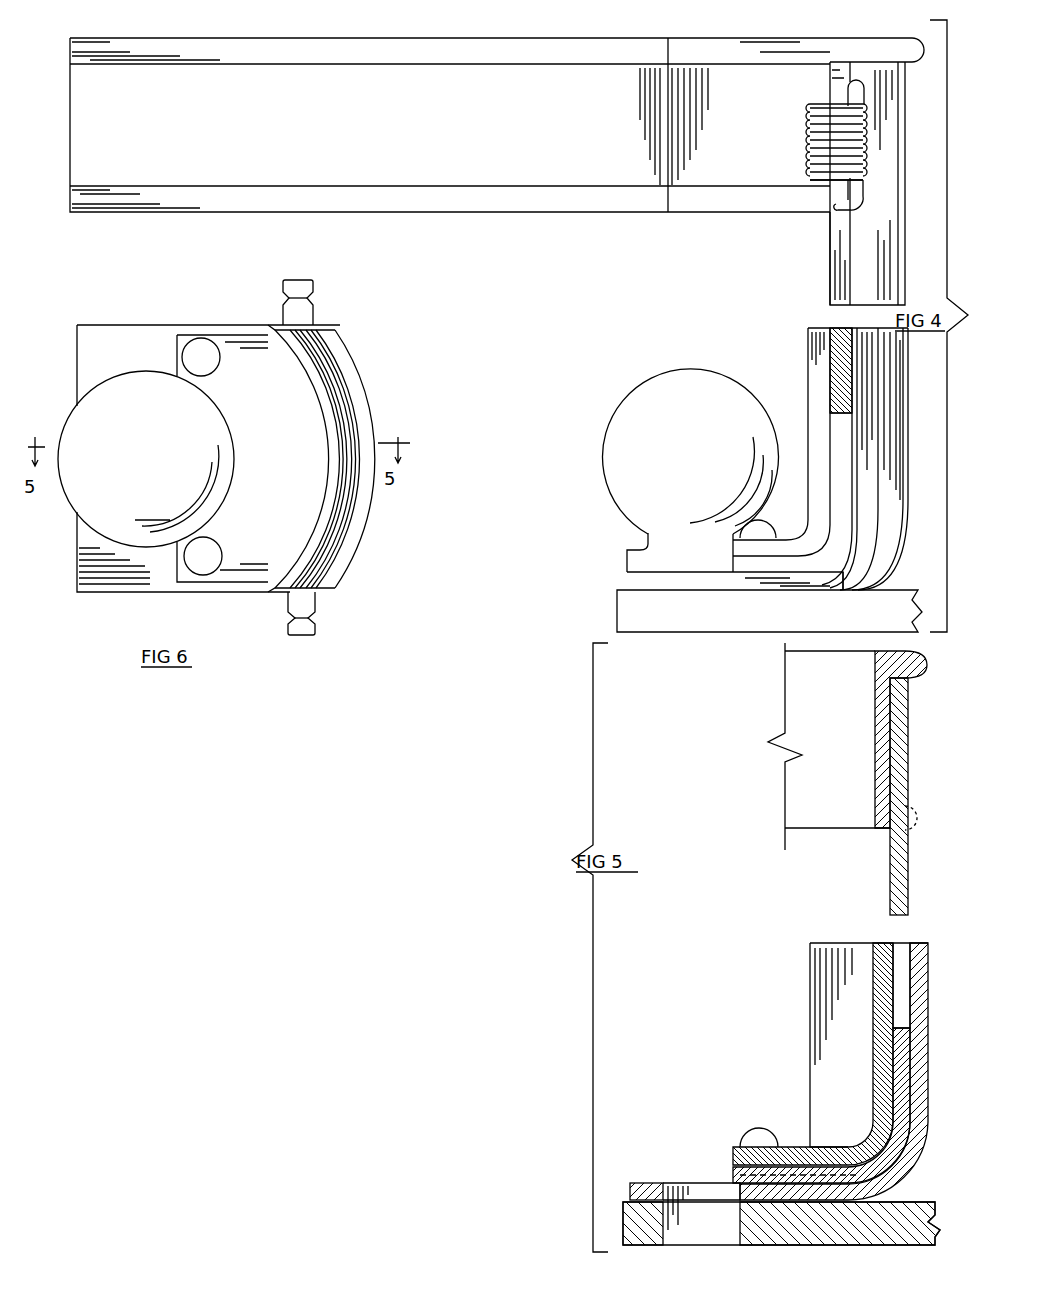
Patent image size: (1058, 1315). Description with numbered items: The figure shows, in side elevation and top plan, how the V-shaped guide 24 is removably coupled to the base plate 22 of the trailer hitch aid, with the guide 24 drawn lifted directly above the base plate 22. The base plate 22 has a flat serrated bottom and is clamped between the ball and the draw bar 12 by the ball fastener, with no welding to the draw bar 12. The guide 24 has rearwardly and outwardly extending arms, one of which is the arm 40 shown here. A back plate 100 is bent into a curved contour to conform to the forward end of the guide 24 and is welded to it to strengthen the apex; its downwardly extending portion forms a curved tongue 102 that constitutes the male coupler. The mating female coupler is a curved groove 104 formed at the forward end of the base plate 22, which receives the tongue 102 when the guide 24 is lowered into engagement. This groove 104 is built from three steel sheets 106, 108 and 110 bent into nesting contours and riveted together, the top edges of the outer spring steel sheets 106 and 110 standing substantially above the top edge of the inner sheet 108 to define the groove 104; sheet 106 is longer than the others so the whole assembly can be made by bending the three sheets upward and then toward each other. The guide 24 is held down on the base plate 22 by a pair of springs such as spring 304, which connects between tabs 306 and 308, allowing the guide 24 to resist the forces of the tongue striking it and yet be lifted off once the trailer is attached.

In FIG. 4, the draw bar 12 is at (625, 617).
In FIG. 5, the draw bar 12 is at (793, 1228).
In FIG. 4, the base plate 22 is at (627, 584).
In FIG. 5, the base plate 22 is at (630, 1183).
In FIG. 4, the V-shaped guide 24 is at (452, 40).
In FIG. 5, the arm 40 is at (812, 727).
In FIG. 4, the back plate 100 is at (877, 115).
In FIG. 5, the back plate 100 is at (897, 727).
In FIG. 4, the tongue 102 is at (838, 243).
In FIG. 5, the tongue 102 is at (895, 863).
In FIG. 4, the curved groove 104 is at (840, 388).
In FIG. 5, the curved groove 104 is at (900, 955).
In FIG. 4, the steel sheet 106 is at (895, 502).
In FIG. 5, the steel sheet 106 is at (925, 943).
In FIG. 4, the steel sheet 108 is at (843, 438).
In FIG. 5, the steel sheet 108 is at (733, 1180).
In FIG. 4, the steel sheet 110 is at (815, 358).
In FIG. 5, the steel sheet 110 is at (878, 1063).
In FIG. 4, the spring 304 is at (812, 158).
In FIG. 4, the tab 306 is at (820, 590).
In FIG. 6, the tab 306 is at (315, 634).
In FIG. 6, the tab 308 is at (313, 280).